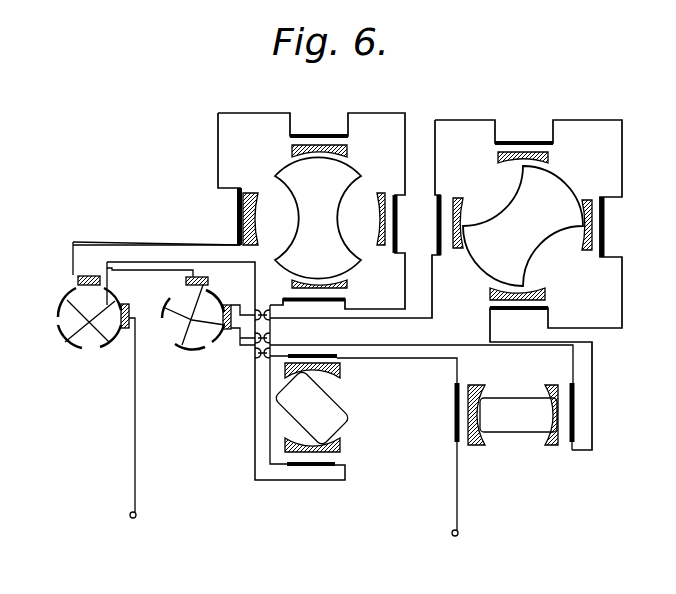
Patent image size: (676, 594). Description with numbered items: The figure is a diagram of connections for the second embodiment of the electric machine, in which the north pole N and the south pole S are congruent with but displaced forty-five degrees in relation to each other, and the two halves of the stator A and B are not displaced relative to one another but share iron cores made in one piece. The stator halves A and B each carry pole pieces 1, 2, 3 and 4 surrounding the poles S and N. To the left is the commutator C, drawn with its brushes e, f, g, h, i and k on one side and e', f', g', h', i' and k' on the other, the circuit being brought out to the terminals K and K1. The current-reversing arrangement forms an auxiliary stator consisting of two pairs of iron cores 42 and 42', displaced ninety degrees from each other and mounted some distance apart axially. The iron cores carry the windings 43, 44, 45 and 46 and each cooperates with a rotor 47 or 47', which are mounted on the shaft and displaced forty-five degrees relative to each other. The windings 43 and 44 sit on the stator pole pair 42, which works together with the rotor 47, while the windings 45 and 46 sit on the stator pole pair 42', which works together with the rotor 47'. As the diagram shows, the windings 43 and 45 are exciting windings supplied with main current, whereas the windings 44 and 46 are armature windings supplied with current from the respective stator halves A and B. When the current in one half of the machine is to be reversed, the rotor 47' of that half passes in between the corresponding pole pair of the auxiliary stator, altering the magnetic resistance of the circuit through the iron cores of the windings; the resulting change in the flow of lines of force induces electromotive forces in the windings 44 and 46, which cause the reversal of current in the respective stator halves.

The stator half A is at (239, 203).
The stator half B is at (446, 275).
The commutator C is at (209, 343).
The south pole S is at (318, 217).
The north pole N is at (523, 226).
The pole piece 1 is at (308, 135).
The pole piece 2 is at (398, 217).
The pole piece 3 is at (513, 309).
The pole piece 4 is at (236, 214).
The iron core pair of auxiliary stator 42 is at (517, 429).
The iron core pair of auxiliary stator 42' is at (330, 408).
The exciting winding 43 is at (455, 404).
The armature winding 44 is at (576, 410).
The exciting winding 45 is at (327, 353).
The armature winding 46 is at (305, 467).
The rotor 47 is at (518, 398).
The rotor 47' is at (323, 408).
The brush e is at (231, 302).
The brush f is at (240, 296).
The brush g is at (193, 329).
The brush h is at (154, 350).
The brush i is at (199, 276).
The brush k is at (225, 354).
The brush e' is at (116, 287).
The brush f' is at (114, 356).
The brush g' is at (88, 328).
The brush h' is at (50, 289).
The brush i' is at (89, 271).
The brush k' is at (132, 399).
The terminal K is at (466, 544).
The terminal K1 is at (150, 526).